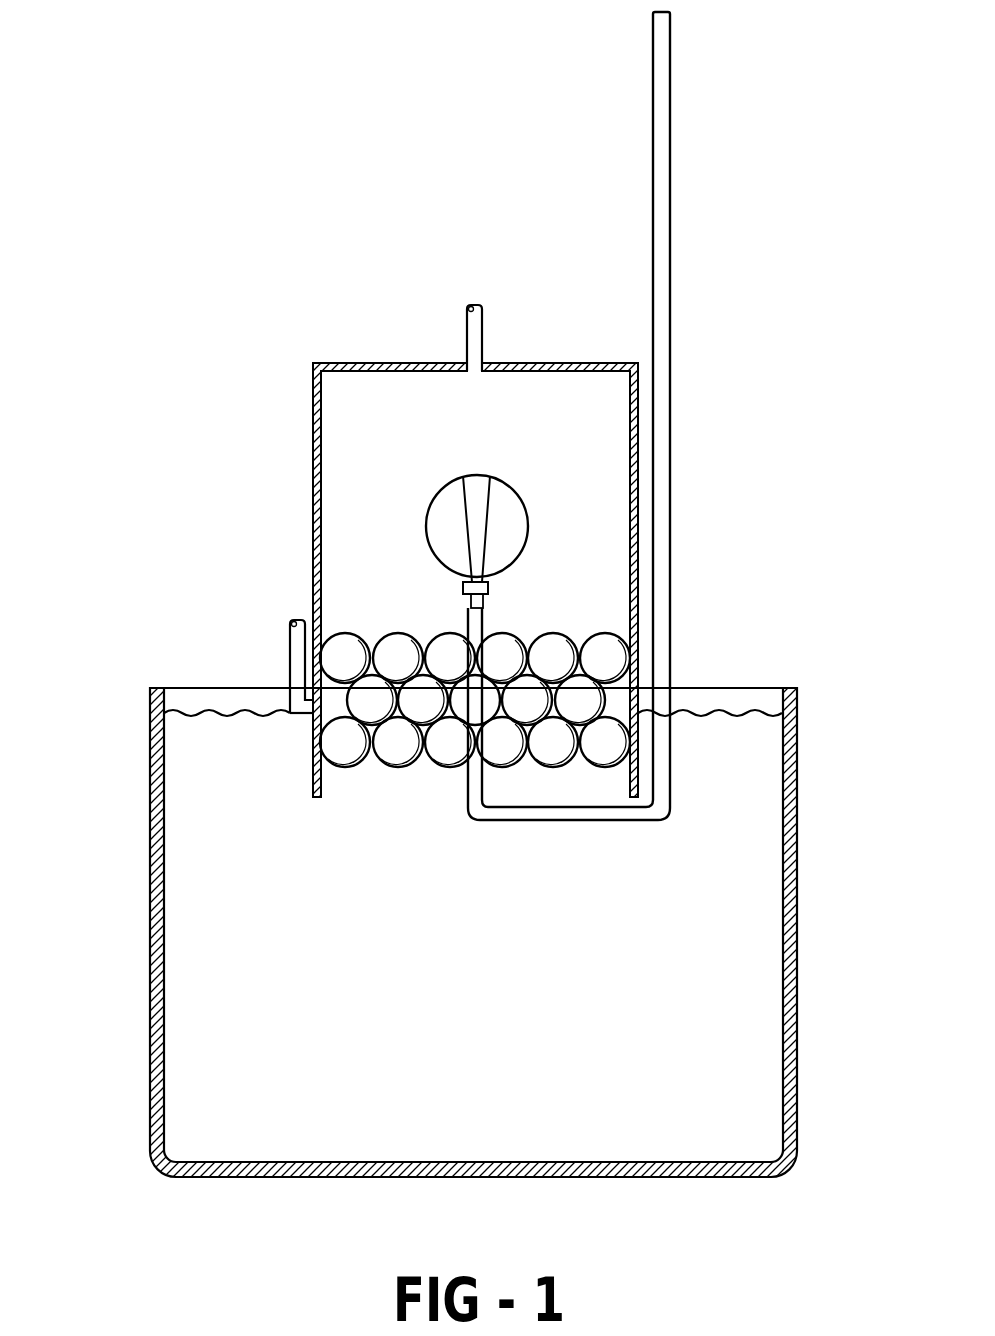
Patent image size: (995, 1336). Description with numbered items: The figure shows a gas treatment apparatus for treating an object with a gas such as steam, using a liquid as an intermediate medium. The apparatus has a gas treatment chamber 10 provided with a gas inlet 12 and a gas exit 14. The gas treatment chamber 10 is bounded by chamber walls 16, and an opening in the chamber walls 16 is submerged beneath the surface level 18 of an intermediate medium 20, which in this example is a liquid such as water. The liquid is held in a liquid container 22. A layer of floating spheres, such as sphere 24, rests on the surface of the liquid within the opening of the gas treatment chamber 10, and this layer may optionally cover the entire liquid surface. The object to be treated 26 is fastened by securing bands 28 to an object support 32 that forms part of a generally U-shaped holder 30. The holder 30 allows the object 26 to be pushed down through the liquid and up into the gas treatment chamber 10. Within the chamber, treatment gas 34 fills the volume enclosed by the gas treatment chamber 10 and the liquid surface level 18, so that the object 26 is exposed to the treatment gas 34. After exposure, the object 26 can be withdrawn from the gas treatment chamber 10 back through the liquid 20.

The gas treatment chamber 10 is at (590, 354).
The gas inlet 12 is at (472, 293).
The gas exit 14 is at (293, 610).
The chamber walls 16 is at (317, 800).
The surface level 18 is at (224, 717).
The intermediate medium 20 is at (292, 957).
The liquid container 22 is at (150, 787).
The sphere 24 is at (399, 740).
The object to be treated 26 is at (447, 500).
The securing bands 28 is at (497, 524).
The U-shaped holder 30 is at (558, 811).
The object support 32 is at (488, 586).
The treatment gas 34 is at (586, 426).